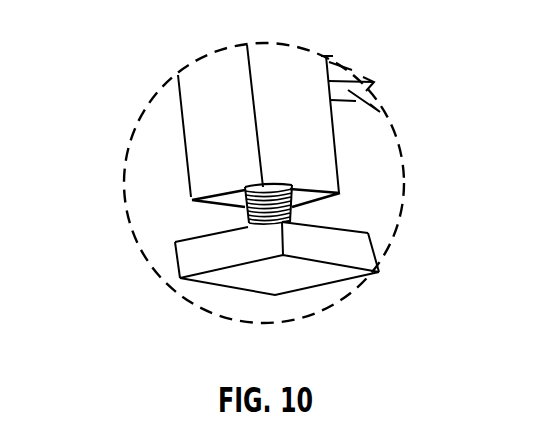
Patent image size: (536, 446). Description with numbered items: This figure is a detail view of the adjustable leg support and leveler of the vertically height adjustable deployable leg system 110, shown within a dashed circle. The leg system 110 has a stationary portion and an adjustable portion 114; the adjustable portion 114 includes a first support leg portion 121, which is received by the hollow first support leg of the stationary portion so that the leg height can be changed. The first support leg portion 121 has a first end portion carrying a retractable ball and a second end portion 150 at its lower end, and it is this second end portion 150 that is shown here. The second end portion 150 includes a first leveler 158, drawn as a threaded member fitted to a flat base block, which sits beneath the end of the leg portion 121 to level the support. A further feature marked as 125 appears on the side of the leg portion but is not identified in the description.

The vertically height adjustable deployable leg system 110 is at (160, 60).
The adjustable portion 114 is at (266, 115).
The first support leg portion 121 is at (210, 99).
The serrations on block face 125 is at (352, 95).
The second end portion 150 is at (205, 193).
The first leveler 158 is at (197, 259).